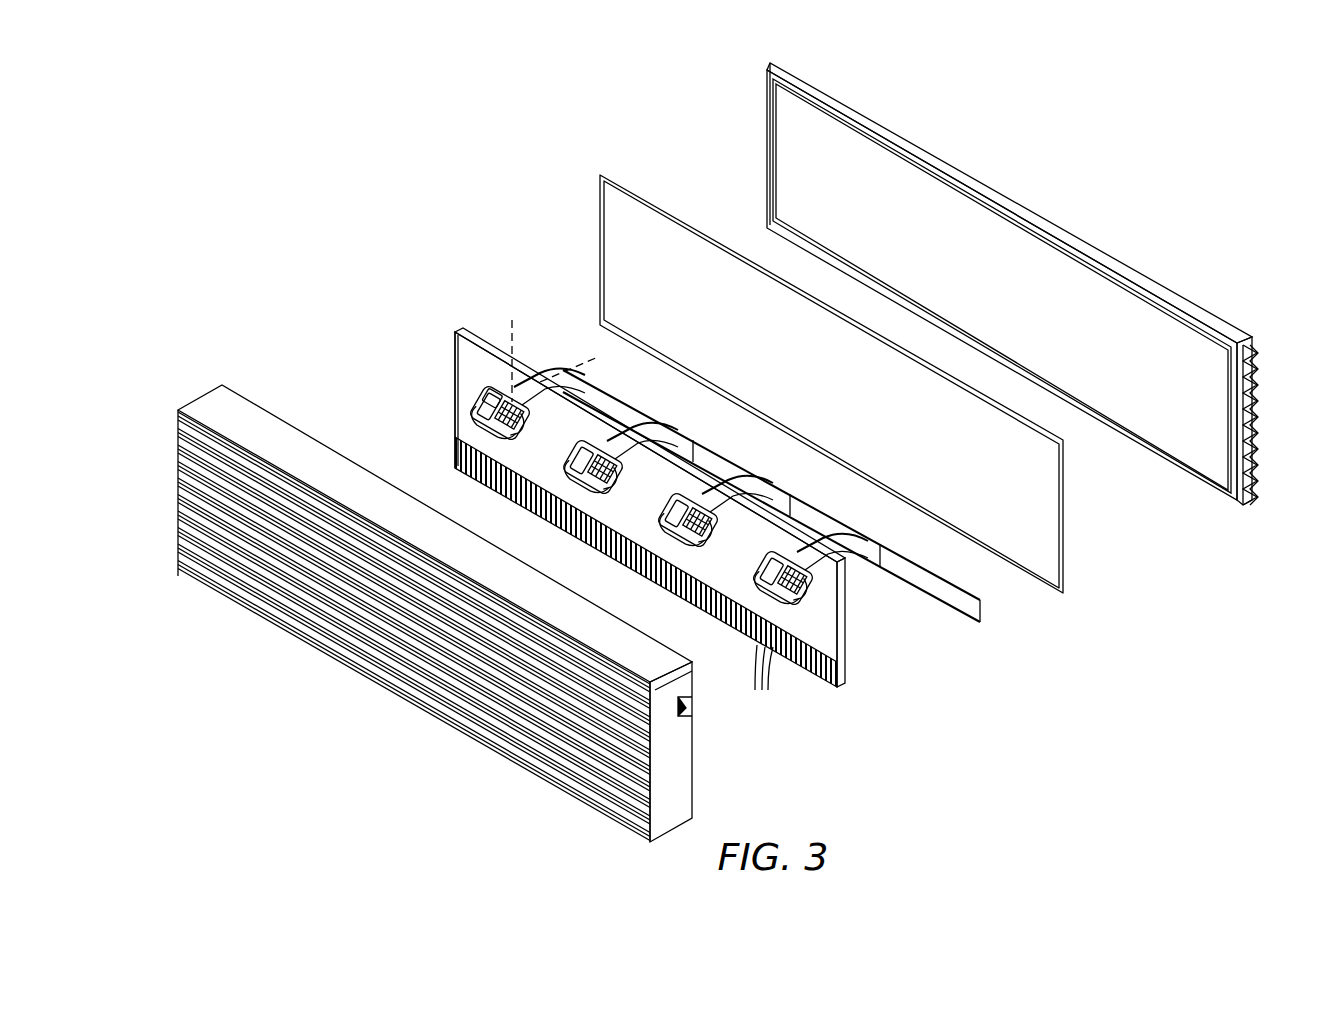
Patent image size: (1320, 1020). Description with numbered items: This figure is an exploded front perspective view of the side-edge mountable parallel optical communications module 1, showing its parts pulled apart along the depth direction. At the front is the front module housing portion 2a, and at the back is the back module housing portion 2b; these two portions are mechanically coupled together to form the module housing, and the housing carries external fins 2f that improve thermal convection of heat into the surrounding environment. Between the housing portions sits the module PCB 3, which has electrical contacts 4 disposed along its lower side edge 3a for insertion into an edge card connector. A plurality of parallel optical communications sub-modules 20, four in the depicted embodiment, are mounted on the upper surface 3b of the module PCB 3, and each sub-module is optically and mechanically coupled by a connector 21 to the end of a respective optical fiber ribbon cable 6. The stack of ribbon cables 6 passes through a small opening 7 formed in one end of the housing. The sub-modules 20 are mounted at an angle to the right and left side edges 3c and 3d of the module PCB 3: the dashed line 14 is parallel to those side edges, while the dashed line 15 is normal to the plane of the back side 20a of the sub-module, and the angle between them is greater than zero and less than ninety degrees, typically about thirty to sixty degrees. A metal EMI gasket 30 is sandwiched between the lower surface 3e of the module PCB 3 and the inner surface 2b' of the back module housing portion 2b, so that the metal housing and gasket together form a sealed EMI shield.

The side-edge mountable parallel optical communications module 1 is at (292, 168).
The front module housing portion 2a is at (458, 602).
The back module housing portion 2b is at (1009, 284).
The inner surface of the back module housing portion 2b' is at (1002, 286).
The external fins 2f is at (575, 790).
The module PCB 3 is at (468, 302).
The lower side edge of the module PCB 3a is at (665, 597).
The upper surface of the module PCB 3b is at (458, 356).
The right side edge of the module PCB 3c is at (846, 590).
The left side edge of the module PCB 3d is at (452, 384).
The lower surface of the module PCB 3e is at (483, 340).
The electrical contacts 4 is at (764, 677).
The optical fiber ribbon cables 6 is at (625, 388).
The small opening 7 is at (692, 706).
The dashed line 14 is at (514, 330).
The dashed line 15 is at (592, 362).
The parallel optical communications sub-modules 20 is at (478, 410).
The back side of the module 20a is at (502, 392).
The connector 21 is at (508, 432).
The metal electromagnetic interference (EMI) gasket 30 is at (663, 207).